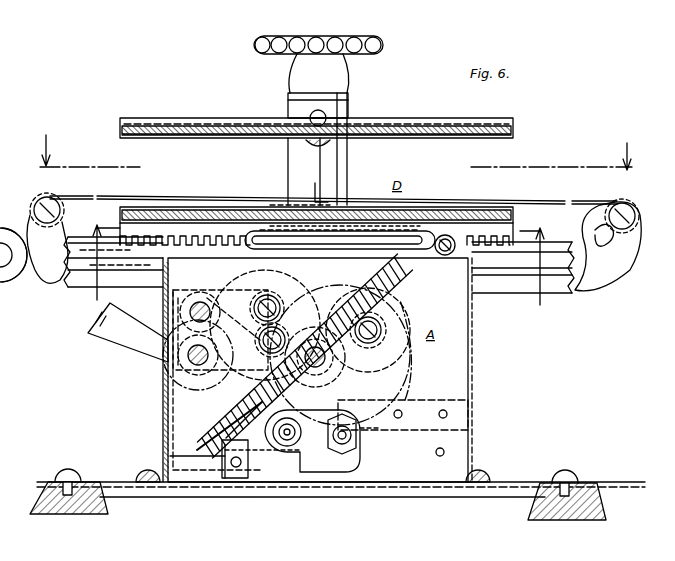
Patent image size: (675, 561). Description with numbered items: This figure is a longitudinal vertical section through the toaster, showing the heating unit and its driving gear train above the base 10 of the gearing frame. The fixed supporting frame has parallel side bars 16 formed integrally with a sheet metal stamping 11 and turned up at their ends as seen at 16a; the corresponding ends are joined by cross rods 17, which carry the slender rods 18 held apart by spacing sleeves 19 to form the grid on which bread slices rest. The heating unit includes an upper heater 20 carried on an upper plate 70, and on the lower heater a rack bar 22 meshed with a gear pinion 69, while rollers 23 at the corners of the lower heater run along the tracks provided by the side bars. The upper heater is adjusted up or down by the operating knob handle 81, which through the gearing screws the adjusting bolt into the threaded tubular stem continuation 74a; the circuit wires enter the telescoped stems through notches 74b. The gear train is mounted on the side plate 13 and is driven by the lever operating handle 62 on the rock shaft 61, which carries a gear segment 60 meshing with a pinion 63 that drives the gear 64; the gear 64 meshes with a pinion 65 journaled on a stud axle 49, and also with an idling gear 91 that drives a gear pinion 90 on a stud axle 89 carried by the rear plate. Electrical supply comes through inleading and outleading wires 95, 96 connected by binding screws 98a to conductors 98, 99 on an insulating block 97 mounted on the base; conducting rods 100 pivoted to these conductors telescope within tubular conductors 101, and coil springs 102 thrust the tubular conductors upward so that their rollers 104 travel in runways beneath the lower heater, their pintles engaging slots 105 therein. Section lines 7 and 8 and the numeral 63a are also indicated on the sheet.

The base 10 is at (122, 482).
The sheet metal stamping 11 is at (472, 366).
The side plate 13 is at (403, 434).
The side bar 16 is at (160, 265).
The turned-up end 16a is at (35, 215).
The cross rod 17 is at (343, 189).
The slender rod 18 is at (200, 196).
The spacing sleeve 19 is at (62, 212).
The upper heater 20 is at (215, 139).
The rack bar 22 is at (504, 210).
The roller 23 is at (10, 213).
The stud axle 49 is at (368, 386).
The gear segment 60 is at (178, 390).
The rock shaft 61 is at (190, 318).
The lever operating handle 62 is at (128, 332).
The pinion 63 is at (282, 331).
The screw 63a is at (265, 325).
The gear 64 is at (214, 292).
The pinion 65 is at (333, 366).
The gear pinion 69 is at (285, 207).
The upper plate 70 is at (200, 118).
The tubular stem continuation 74a is at (8, 275).
The notch 74b is at (306, 143).
The section line 7- 7 is at (315, 272).
The section line 8- 8 is at (336, 147).
The operating knob handle 81 is at (348, 71).
The stud axle 89 is at (382, 322).
The gear pinion 90 is at (448, 138).
The idling gear 91 is at (435, 207).
The inleading wire 95 is at (350, 448).
The outleading wire 96 is at (284, 448).
The insulating block 97 is at (187, 472).
The conductor 98 is at (312, 470).
The binding screw 98a is at (370, 433).
The conductor 99 is at (252, 470).
The conducting rod 100 is at (300, 378).
The tubular conductor 101 is at (348, 338).
The coil spring 102 is at (318, 375).
The roller 104 is at (438, 255).
The slot 105 is at (250, 245).